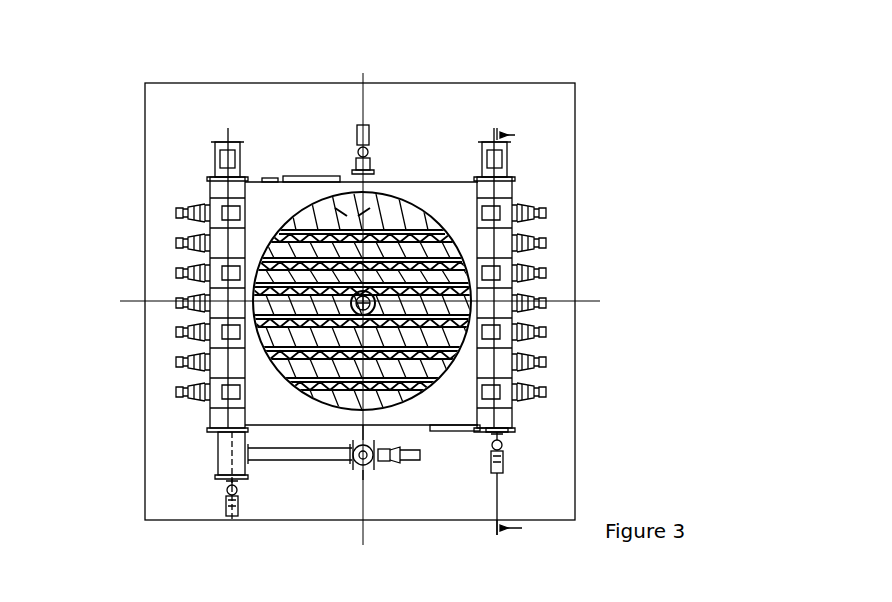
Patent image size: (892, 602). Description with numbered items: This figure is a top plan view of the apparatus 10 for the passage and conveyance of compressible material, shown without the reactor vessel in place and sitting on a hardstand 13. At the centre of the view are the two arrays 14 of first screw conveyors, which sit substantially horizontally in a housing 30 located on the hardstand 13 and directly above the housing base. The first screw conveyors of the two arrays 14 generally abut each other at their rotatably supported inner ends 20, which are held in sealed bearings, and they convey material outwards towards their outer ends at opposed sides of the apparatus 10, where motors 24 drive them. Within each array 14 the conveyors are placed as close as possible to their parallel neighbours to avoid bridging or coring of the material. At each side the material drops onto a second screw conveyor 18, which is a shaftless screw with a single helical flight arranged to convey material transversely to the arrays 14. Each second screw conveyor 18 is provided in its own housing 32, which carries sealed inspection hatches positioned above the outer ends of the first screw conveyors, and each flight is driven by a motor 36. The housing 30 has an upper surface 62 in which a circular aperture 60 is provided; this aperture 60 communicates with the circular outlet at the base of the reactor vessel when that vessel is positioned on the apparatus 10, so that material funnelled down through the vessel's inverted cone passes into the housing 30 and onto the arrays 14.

The apparatus 10 is at (660, 183).
The hardstand 13 is at (568, 115).
The array of first screw conveyors 14 is at (432, 205).
The second screw conveyor 18 is at (517, 193).
The inner ends 20 is at (337, 210).
The motors 24 is at (550, 240).
The housing 30 is at (315, 427).
The housing 32 is at (512, 425).
The motor 36 is at (500, 462).
The circular aperture 60 is at (443, 383).
The upper surface 62 is at (268, 200).